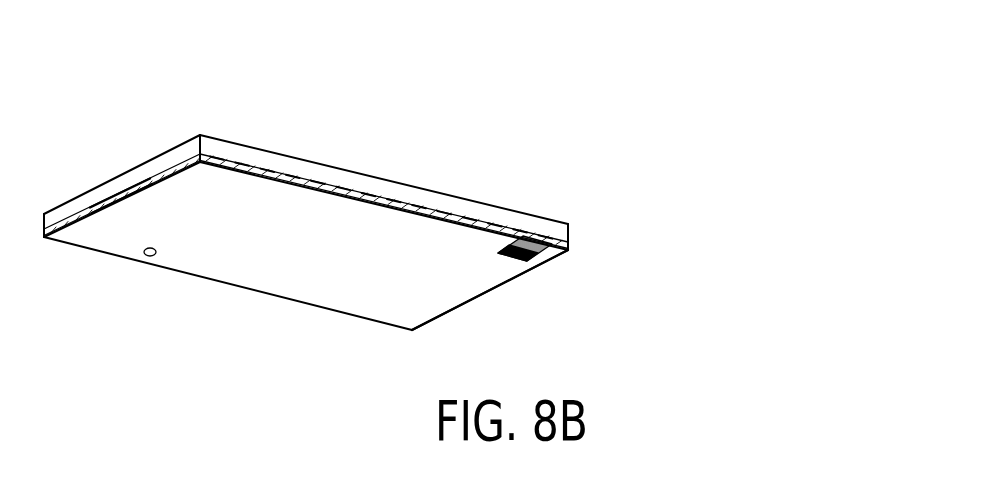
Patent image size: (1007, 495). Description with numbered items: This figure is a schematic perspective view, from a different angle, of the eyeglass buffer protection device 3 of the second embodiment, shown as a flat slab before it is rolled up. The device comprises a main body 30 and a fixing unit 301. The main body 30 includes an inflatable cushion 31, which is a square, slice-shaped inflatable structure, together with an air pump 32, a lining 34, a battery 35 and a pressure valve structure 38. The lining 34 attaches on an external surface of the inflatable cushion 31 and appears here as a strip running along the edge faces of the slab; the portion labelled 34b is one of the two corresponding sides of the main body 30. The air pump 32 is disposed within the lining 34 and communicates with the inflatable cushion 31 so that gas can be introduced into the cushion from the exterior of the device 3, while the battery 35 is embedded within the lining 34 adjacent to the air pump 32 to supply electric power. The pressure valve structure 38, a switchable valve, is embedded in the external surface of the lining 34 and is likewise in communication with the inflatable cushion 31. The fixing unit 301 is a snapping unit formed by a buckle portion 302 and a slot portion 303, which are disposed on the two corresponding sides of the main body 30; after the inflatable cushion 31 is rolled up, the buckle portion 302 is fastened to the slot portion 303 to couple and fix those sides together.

The eyeglass buffer protection device 3 is at (666, 111).
The main body 30 is at (306, 137).
The inflatable cushion 31 is at (282, 162).
The air pump 32 is at (530, 237).
The lining 34 is at (367, 197).
The corresponding side of the main body 34b is at (180, 162).
The battery 35 is at (485, 185).
The pressure valve structure 38 is at (128, 185).
The fixing unit 301 is at (327, 355).
The buckle portion 302 is at (455, 307).
The slot portion 303 is at (180, 162).